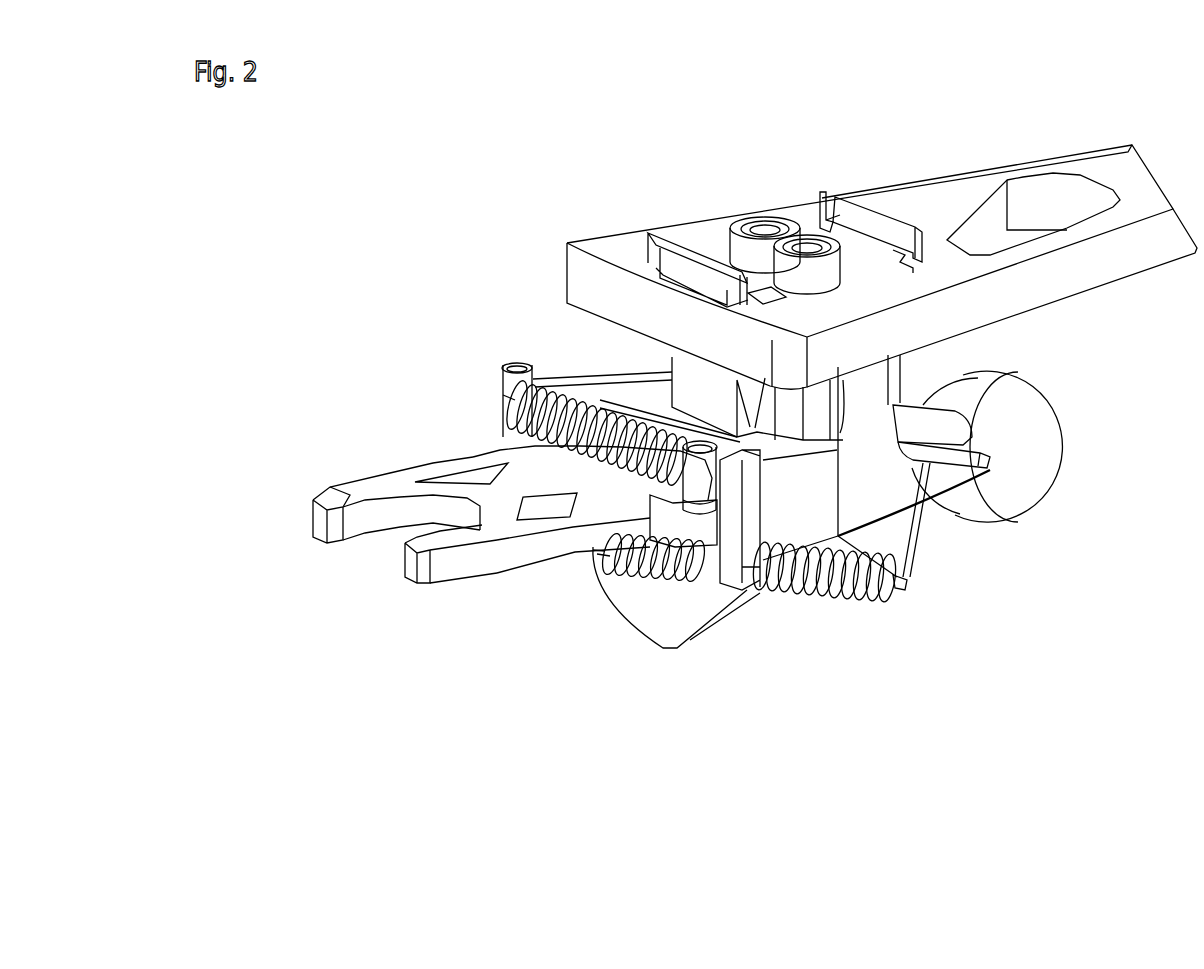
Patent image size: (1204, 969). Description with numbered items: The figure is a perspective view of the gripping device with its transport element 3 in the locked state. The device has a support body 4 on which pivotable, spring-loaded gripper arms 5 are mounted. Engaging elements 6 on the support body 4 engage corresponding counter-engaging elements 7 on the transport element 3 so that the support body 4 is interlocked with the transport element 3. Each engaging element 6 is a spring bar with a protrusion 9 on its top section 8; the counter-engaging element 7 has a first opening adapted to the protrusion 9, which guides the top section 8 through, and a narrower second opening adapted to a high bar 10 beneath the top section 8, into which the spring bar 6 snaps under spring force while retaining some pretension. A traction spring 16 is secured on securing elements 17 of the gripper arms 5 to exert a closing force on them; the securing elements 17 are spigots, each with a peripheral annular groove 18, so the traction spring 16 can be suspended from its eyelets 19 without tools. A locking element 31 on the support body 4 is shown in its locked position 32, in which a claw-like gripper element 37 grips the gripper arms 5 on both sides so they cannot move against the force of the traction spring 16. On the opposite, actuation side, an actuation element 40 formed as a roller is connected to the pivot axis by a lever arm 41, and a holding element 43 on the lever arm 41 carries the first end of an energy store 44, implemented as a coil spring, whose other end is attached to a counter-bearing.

The transport element 3 is at (1116, 158).
The support body 4 is at (556, 358).
The gripper arms 5 is at (388, 481).
The engaging element 6 is at (645, 240).
The counter-engaging element 7 is at (762, 292).
The top section 8 is at (874, 210).
The protrusion 9 is at (826, 193).
The high bar 10 is at (688, 396).
The traction spring 16 is at (503, 400).
The securing elements 17 is at (500, 362).
The peripheral annular groove 18 is at (686, 486).
The eyelets 19 is at (607, 601).
The locking element 31 is at (907, 540).
The locked position 32 is at (933, 624).
The claw-like gripper element 37 is at (648, 637).
The actuation element 40 is at (1034, 414).
The lever arm 41 is at (938, 409).
The holding element 43 is at (897, 506).
The energy store 44 is at (828, 594).